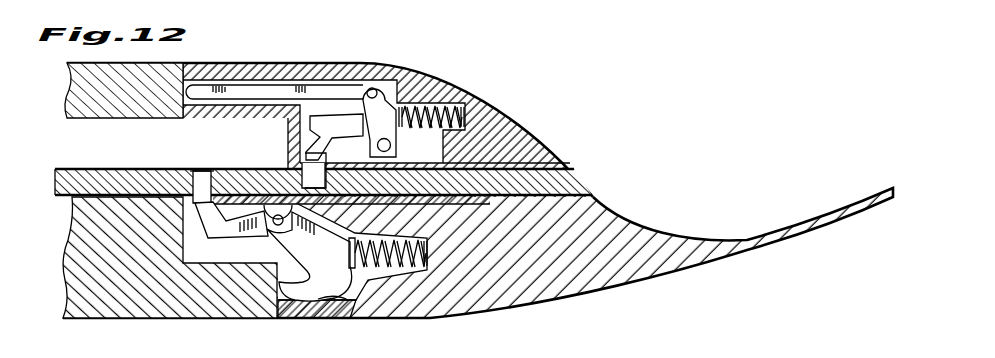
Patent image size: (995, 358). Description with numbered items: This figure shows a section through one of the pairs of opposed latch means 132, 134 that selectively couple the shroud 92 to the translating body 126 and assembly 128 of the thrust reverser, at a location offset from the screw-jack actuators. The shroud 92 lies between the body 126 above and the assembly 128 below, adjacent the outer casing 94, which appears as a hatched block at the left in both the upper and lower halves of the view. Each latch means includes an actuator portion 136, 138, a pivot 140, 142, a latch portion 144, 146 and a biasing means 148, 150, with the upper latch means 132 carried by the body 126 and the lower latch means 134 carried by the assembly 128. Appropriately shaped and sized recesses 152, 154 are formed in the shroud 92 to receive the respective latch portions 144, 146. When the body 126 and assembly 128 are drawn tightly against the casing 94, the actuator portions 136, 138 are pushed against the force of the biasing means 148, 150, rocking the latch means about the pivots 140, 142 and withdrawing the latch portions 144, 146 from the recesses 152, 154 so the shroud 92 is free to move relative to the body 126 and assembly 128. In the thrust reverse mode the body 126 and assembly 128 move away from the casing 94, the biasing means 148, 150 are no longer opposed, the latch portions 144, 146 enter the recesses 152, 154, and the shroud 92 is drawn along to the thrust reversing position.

The shroud 92 is at (582, 182).
The outer casing 94 is at (123, 100).
The body 126 is at (487, 110).
The assembly 128 is at (609, 296).
The latch means 132 is at (403, 91).
The latch means 134 is at (342, 300).
The actuator portion 136 is at (258, 90).
The actuator portion 138 is at (300, 303).
The pivot 140 is at (397, 142).
The pivot 142 is at (311, 256).
The latch portion 144 is at (311, 120).
The latch portion 146 is at (207, 229).
The biasing means 148 is at (467, 120).
The biasing means 150 is at (427, 253).
The recess 152 is at (297, 172).
The recess 154 is at (198, 168).